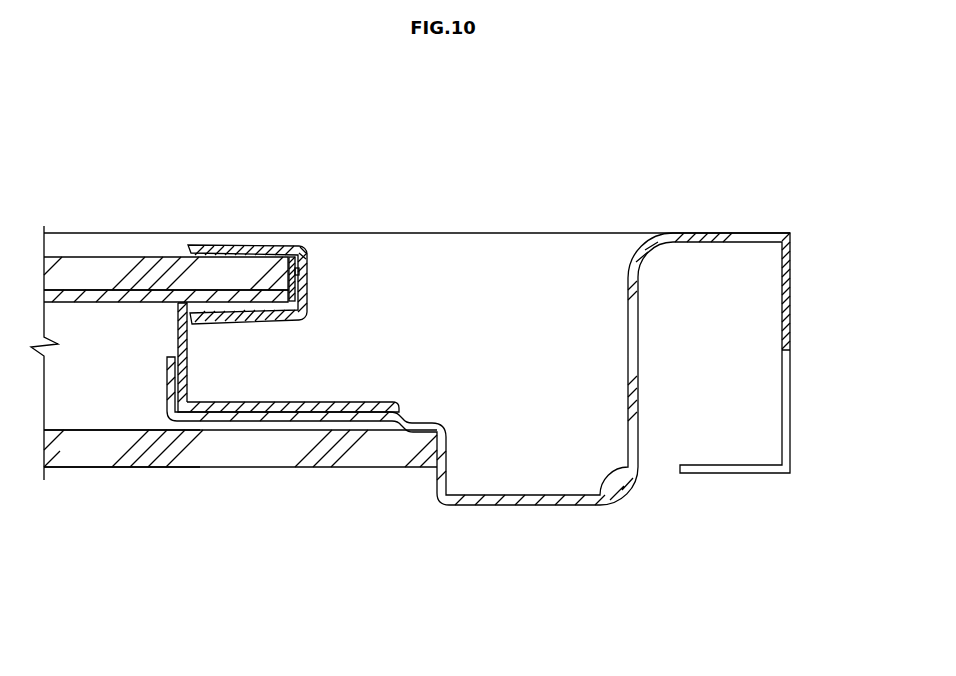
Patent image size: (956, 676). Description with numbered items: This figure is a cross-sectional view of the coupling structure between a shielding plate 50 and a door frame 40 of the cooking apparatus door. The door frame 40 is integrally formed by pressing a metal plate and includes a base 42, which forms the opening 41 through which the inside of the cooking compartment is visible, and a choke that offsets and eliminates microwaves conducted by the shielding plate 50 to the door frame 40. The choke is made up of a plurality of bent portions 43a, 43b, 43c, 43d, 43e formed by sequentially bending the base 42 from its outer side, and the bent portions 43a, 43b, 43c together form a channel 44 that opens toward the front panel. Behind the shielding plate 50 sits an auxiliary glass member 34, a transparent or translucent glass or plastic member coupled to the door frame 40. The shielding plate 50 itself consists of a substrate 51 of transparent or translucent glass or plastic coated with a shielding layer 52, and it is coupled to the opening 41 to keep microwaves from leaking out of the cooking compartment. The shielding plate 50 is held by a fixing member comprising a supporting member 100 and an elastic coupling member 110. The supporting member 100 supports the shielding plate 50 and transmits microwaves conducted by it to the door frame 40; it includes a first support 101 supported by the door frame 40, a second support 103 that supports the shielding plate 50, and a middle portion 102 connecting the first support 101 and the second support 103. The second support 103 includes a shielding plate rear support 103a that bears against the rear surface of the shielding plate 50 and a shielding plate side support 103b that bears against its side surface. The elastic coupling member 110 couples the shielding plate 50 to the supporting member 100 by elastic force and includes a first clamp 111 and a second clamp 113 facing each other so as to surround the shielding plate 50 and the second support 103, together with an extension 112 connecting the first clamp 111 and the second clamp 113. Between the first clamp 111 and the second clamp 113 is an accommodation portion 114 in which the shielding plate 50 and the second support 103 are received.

The auxiliary glass member 34 is at (95, 468).
The door frame 40 is at (457, 366).
The opening 41 is at (167, 395).
The base 42 is at (305, 445).
The bent portion 43a is at (447, 462).
The bent portion 43b is at (537, 505).
The bent portion 43c is at (631, 365).
The bent portion 43d is at (722, 240).
The bent portion 43e is at (793, 308).
The channel 44 is at (610, 470).
The shielding plate 50 is at (166, 218).
The substrate 51 is at (146, 272).
The shielding layer 52 is at (79, 296).
The supporting member 100 is at (279, 357).
The first support 101 is at (268, 405).
The middle portion 102 is at (177, 338).
The second support 103 is at (376, 302).
The shielding plate rear support 103a is at (294, 325).
The shielding plate side support 103b is at (294, 284).
The elastic coupling member 110 is at (292, 233).
The first clamp 111 is at (258, 248).
The extension 112 is at (306, 262).
The second clamp 113 is at (222, 318).
The accommodation portion 114 is at (296, 247).